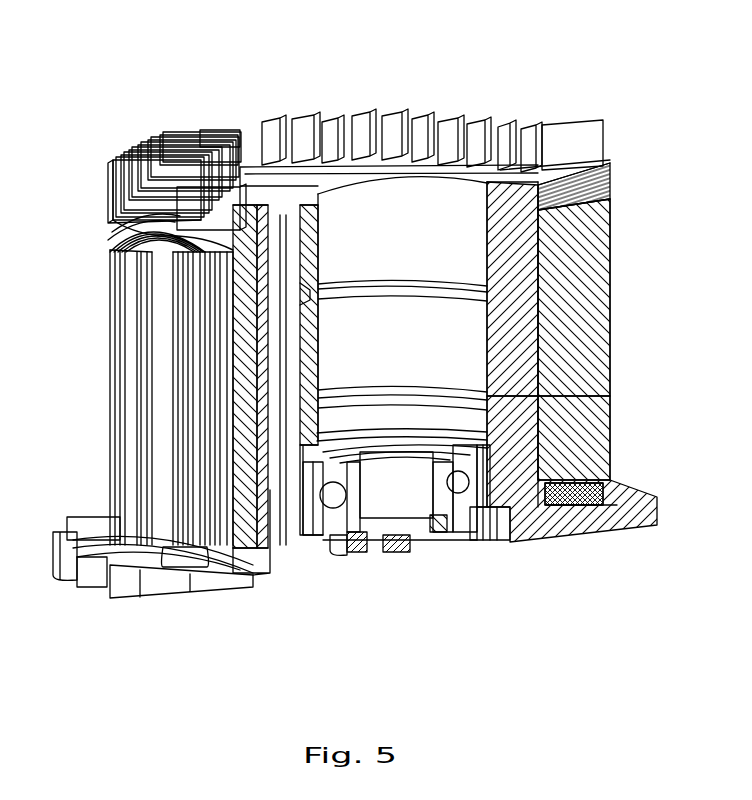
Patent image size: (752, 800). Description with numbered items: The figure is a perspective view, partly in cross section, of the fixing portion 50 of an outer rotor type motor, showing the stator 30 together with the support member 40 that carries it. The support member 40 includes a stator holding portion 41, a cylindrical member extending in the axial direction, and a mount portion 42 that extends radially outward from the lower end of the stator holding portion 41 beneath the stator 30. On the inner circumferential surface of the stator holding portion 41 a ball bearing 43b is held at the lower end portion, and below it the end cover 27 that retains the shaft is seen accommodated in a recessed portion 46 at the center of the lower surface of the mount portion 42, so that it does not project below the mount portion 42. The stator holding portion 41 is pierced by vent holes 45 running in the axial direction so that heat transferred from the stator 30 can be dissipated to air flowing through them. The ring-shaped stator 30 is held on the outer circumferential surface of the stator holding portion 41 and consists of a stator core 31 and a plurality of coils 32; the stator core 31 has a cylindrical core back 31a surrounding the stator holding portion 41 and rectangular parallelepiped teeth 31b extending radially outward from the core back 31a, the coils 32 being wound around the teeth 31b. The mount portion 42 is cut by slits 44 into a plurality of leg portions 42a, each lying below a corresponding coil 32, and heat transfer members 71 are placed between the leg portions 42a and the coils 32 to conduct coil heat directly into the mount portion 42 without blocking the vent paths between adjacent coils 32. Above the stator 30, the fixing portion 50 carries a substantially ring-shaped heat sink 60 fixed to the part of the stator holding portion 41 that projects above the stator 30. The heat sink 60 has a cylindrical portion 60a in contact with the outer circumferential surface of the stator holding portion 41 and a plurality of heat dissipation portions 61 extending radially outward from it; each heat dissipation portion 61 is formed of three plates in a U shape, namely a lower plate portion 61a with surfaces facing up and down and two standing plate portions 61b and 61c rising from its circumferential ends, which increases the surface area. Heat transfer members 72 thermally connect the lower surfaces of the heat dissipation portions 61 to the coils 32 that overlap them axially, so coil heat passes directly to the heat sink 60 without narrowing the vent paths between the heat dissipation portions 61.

The fixing portion 50 is at (128, 118).
The end cover 27 is at (400, 545).
The stator 30 is at (618, 268).
The stator core 31 is at (662, 292).
The core back 31a is at (545, 296).
The teeth 31b is at (595, 328).
The coils 32 is at (607, 192).
The support member 40 is at (662, 395).
The stator holding portion 41 is at (533, 398).
The mount portion 42 is at (640, 492).
The leg portions 42a is at (630, 527).
The ball bearing 43b is at (470, 522).
The slits 44 is at (97, 598).
The vent holes 45 is at (373, 158).
The recessed portion 46 is at (322, 560).
The heat sink 60 is at (540, 118).
The cylindrical portion 60a is at (250, 163).
The heat dissipation portions 61 is at (215, 126).
The lower plate portion 61a is at (120, 215).
The standing plate portion 61b is at (115, 175).
The standing plate portion 61c is at (170, 150).
The heat transfer members 71 is at (585, 508).
The heat transfer members 72 is at (600, 183).